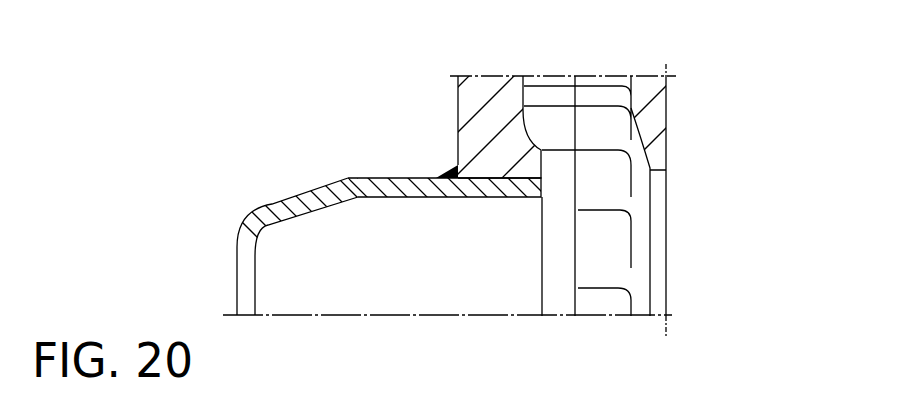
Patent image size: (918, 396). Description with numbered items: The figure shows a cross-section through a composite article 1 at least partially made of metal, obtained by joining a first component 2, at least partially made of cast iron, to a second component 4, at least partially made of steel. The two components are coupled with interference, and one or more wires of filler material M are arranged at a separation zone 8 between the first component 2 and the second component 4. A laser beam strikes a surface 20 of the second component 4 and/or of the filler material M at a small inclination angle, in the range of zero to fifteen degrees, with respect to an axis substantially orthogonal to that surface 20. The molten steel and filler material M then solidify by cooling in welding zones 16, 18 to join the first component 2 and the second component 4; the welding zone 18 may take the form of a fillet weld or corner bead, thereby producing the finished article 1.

The composite article 1 is at (712, 99).
The first component 2 is at (446, 90).
The second component 4 is at (261, 197).
The separation zone 8 is at (500, 198).
The welding zone 16 is at (564, 189).
The welding zone 18 is at (422, 158).
The surface 20 is at (544, 192).
The filler material M is at (448, 178).